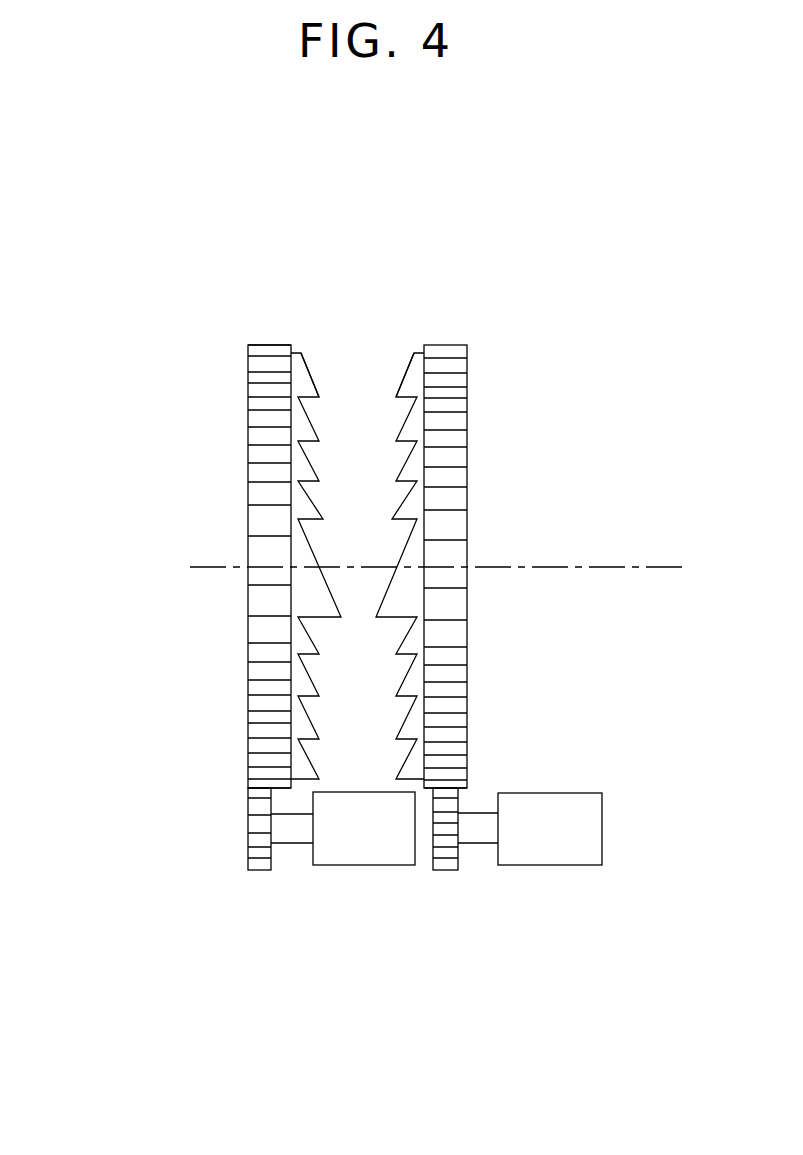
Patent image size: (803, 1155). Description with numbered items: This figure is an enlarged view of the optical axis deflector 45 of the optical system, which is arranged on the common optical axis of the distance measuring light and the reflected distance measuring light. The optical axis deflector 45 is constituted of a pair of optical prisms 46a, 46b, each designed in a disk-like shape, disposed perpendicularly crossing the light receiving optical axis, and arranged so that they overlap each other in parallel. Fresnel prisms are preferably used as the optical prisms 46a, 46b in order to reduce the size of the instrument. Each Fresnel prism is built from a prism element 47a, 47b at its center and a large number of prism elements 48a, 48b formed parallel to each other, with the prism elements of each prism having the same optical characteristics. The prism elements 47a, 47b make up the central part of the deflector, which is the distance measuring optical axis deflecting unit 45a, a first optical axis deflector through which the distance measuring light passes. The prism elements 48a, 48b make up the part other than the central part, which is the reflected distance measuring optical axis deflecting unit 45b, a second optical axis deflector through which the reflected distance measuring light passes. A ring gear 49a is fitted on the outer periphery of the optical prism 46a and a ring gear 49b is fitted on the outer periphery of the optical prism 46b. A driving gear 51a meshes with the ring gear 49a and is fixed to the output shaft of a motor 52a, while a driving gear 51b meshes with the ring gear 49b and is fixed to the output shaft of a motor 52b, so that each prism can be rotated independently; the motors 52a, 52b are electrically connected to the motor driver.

The optical axis deflector 45 is at (358, 131).
The distance measuring optical axis deflecting unit 45a is at (248, 583).
The reflected distance measuring optical axis deflecting unit 45b is at (248, 425).
The optical prism 46a is at (248, 724).
The optical prism 46b is at (467, 697).
The prism element 47a is at (315, 550).
The prism element 47b is at (388, 587).
The prism elements 48a is at (310, 375).
The prism elements 48b is at (405, 373).
The ring gear 49a is at (268, 345).
The ring gear 49b is at (444, 345).
The driving gear 51a is at (255, 870).
The driving gear 51b is at (445, 870).
The motor 52a is at (335, 865).
The motor 52b is at (567, 865).